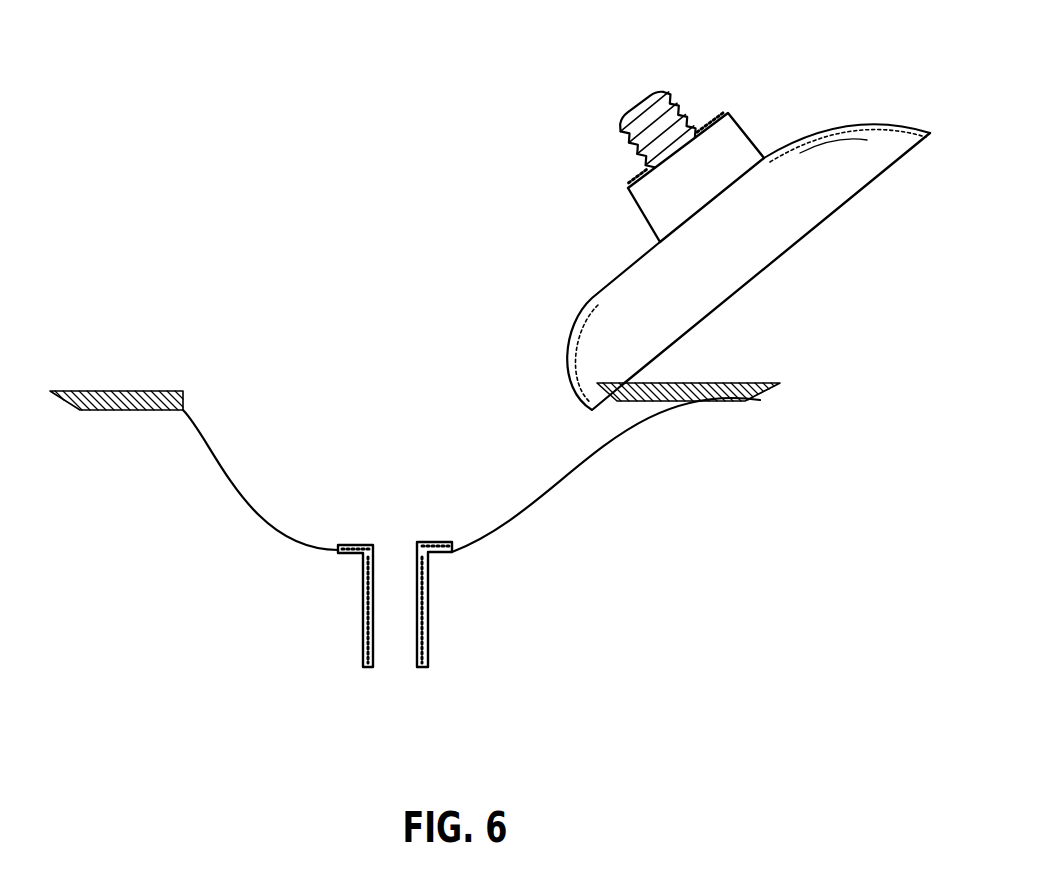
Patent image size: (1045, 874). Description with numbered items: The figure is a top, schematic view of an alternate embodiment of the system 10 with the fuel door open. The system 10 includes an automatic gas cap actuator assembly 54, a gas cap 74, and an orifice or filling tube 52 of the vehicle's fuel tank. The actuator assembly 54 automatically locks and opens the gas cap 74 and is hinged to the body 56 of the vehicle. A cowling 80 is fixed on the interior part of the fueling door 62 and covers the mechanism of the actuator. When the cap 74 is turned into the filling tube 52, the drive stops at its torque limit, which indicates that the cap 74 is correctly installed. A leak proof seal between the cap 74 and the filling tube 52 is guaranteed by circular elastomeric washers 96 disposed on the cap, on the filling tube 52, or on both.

The system 10 is at (540, 209).
The filling tube 52 is at (397, 627).
The automatic gas cap actuator assembly 54 is at (740, 268).
The body 56 is at (128, 390).
The fueling door 62 is at (840, 207).
The gas cap 74 is at (689, 164).
The cowling 80 is at (853, 127).
The circular elastomeric washers 96 is at (430, 542).